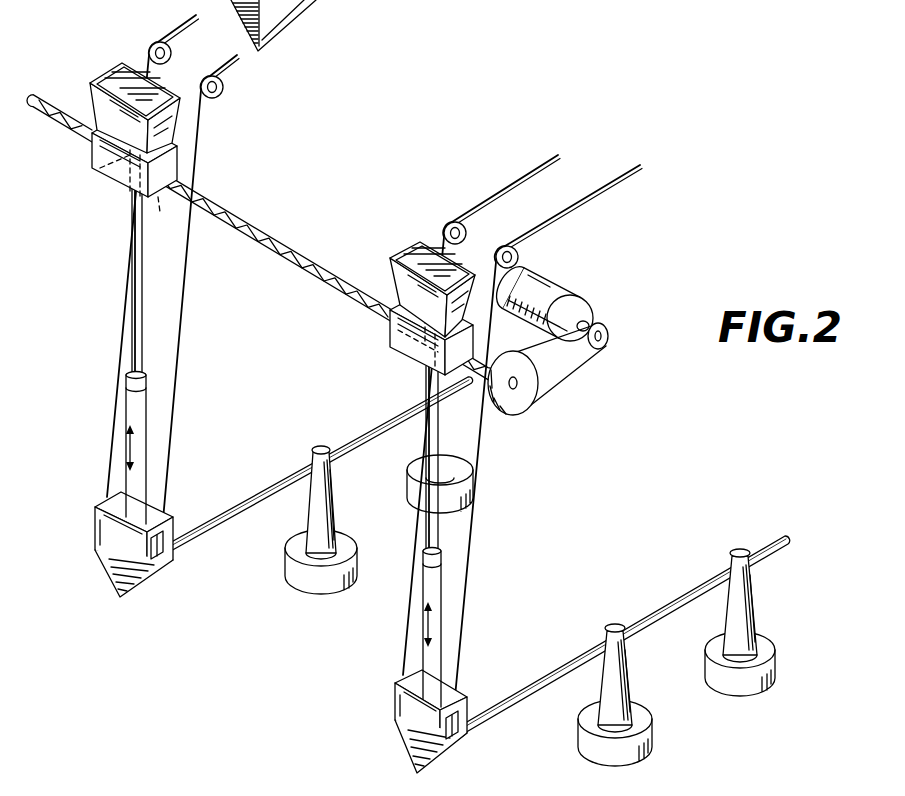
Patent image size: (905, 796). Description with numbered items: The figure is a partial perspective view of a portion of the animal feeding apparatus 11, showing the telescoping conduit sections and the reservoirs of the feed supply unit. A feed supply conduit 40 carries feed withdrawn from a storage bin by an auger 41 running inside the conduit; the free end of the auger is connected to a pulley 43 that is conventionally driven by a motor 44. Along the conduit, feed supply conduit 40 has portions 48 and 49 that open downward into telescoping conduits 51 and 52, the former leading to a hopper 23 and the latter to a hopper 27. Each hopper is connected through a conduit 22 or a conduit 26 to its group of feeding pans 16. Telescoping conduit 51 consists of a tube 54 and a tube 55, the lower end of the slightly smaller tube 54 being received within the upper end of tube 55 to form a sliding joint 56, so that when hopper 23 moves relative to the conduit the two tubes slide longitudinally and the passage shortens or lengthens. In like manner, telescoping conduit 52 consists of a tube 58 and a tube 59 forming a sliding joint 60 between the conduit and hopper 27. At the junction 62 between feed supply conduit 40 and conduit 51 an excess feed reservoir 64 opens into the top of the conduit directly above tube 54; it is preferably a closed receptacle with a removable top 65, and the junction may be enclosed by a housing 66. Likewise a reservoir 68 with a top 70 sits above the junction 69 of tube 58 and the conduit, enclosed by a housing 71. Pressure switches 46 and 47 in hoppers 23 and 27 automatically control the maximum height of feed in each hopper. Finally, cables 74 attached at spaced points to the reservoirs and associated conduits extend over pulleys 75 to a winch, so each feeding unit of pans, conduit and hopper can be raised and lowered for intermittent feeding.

The animal feeding apparatus 11 is at (97, 302).
The feeding pans 16 is at (353, 551).
The conduit 22 is at (283, 478).
The hopper 23 is at (108, 545).
The conduit 26 is at (671, 598).
The hopper 27 is at (410, 717).
The feed supply conduit 40 is at (52, 96).
The auger 41 is at (238, 205).
The pulley 43 is at (522, 393).
The motor 44 is at (566, 290).
The pressure switch 46 is at (166, 556).
The pressure switch 47 is at (466, 736).
The portion of feed supply conduit 48 is at (132, 166).
The portion of feed supply conduit 49 is at (425, 346).
The telescoping conduit 51 is at (133, 225).
The telescoping conduit 52 is at (431, 437).
The tube 54 is at (146, 282).
The tube 55 is at (133, 404).
The sliding joint 56 is at (146, 380).
The tube 58 is at (441, 527).
The tube 59 is at (443, 594).
The sliding joint 60 is at (443, 563).
The junction 62 is at (160, 198).
The excess feed reservoir 64 is at (96, 84).
The removable top 65 is at (118, 62).
The housing 66 is at (93, 150).
The reservoir 68 is at (398, 270).
The junction 69 is at (437, 372).
The top 70 is at (408, 244).
The housing 71 is at (392, 331).
The cables 74 is at (110, 449).
The pulleys 75 is at (171, 53).